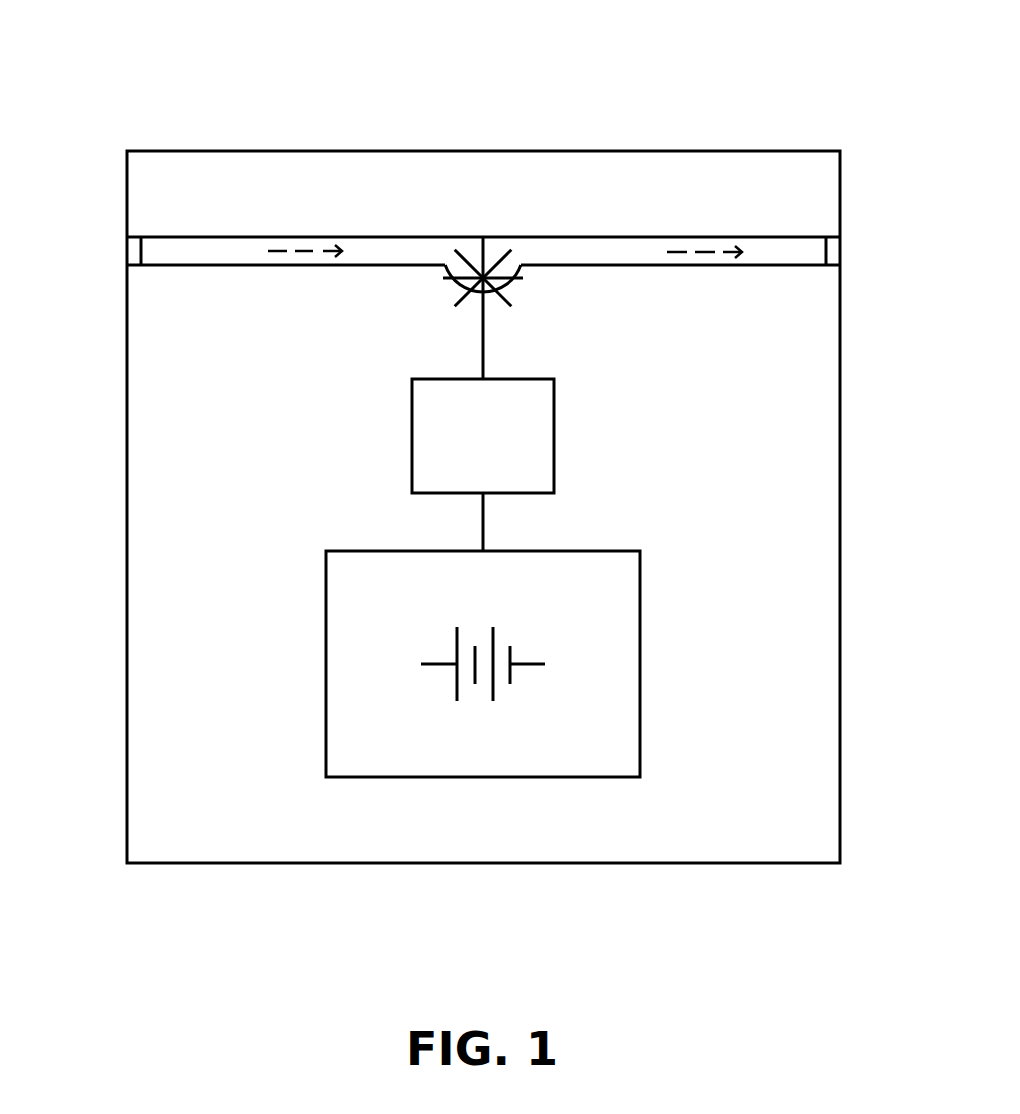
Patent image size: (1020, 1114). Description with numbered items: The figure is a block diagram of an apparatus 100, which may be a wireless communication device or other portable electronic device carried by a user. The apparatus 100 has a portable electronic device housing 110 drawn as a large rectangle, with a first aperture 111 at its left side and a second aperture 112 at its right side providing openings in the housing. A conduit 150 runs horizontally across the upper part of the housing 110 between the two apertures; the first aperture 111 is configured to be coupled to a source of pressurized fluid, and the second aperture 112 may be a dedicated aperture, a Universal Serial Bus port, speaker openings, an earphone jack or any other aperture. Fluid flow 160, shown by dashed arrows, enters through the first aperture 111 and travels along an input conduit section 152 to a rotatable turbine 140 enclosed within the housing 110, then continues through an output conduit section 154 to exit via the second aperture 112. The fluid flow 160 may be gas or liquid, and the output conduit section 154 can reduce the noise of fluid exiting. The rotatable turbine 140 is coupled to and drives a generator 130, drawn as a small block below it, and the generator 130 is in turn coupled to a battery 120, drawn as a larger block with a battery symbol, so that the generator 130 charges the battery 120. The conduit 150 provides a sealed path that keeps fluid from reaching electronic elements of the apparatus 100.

The apparatus 100 is at (856, 92).
The portable electronic device housing 110 is at (682, 151).
The first aperture 111 is at (100, 252).
The second aperture 112 is at (875, 258).
The battery 120 is at (640, 635).
The generator 130 is at (554, 419).
The rotatable turbine 140 is at (485, 251).
The conduit 150 is at (565, 222).
The input conduit section 152 is at (183, 235).
The output conduit section 154 is at (690, 237).
The fluid flow 160 is at (298, 252).